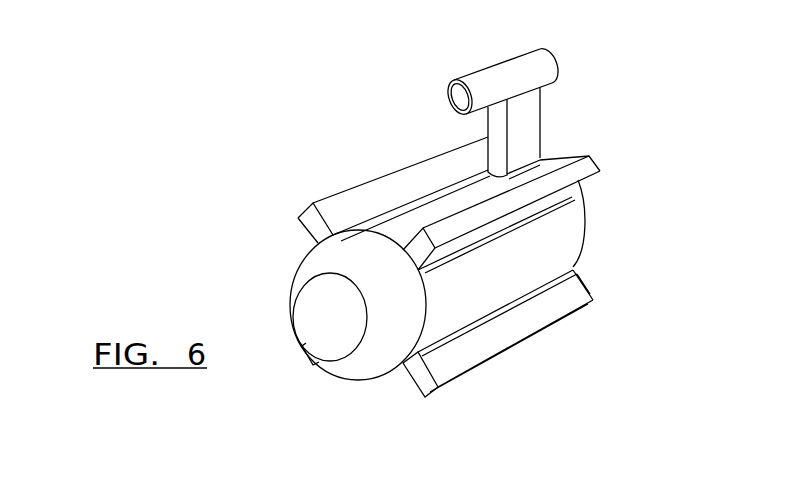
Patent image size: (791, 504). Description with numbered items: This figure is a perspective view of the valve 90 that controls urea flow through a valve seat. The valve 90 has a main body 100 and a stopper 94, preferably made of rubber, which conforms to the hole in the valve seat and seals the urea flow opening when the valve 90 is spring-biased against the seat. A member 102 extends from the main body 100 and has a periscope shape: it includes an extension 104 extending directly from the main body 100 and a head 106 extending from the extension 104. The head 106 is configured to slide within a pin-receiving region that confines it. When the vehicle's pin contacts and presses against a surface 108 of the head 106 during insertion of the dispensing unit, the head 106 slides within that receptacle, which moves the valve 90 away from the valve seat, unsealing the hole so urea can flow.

The valve 90 is at (285, 152).
The stopper 94 is at (318, 322).
The main body 100 is at (550, 241).
The member 102 is at (543, 111).
The extension 104 is at (520, 128).
The head 106 is at (505, 73).
The surface 108 is at (460, 93).